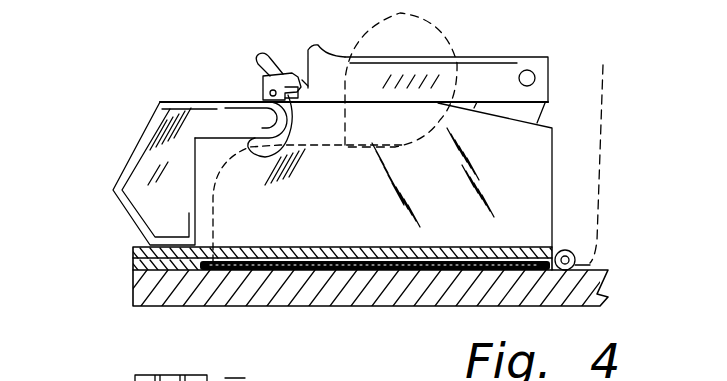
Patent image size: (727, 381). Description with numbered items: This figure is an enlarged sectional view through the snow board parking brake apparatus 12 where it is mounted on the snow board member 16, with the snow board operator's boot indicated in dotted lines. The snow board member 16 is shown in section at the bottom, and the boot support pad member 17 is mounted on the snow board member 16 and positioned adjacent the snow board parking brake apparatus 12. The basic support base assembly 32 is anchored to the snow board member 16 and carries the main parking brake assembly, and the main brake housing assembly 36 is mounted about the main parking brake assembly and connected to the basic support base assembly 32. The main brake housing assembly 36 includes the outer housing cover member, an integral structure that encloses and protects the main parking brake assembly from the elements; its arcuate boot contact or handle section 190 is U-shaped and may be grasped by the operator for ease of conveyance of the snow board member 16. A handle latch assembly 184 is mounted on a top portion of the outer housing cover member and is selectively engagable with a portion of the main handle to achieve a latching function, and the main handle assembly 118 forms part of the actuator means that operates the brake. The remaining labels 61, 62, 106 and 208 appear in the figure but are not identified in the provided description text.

The snow board parking brake apparatus 12 is at (145, 104).
The snow board member 16 is at (407, 288).
The boot support pad member 17 is at (270, 273).
The basic support base assembly 32 is at (553, 247).
The main brake housing assembly 36 is at (537, 150).
The contact array 61 is at (162, 377).
The connector 62 is at (233, 380).
The upper member 106 is at (90, 0).
The main handle assembly 118 is at (472, 57).
The handle latch assembly 184 is at (285, 75).
The arcuate boot contact or handle section 190 is at (260, 73).
The pivot region 208 is at (405, 14).